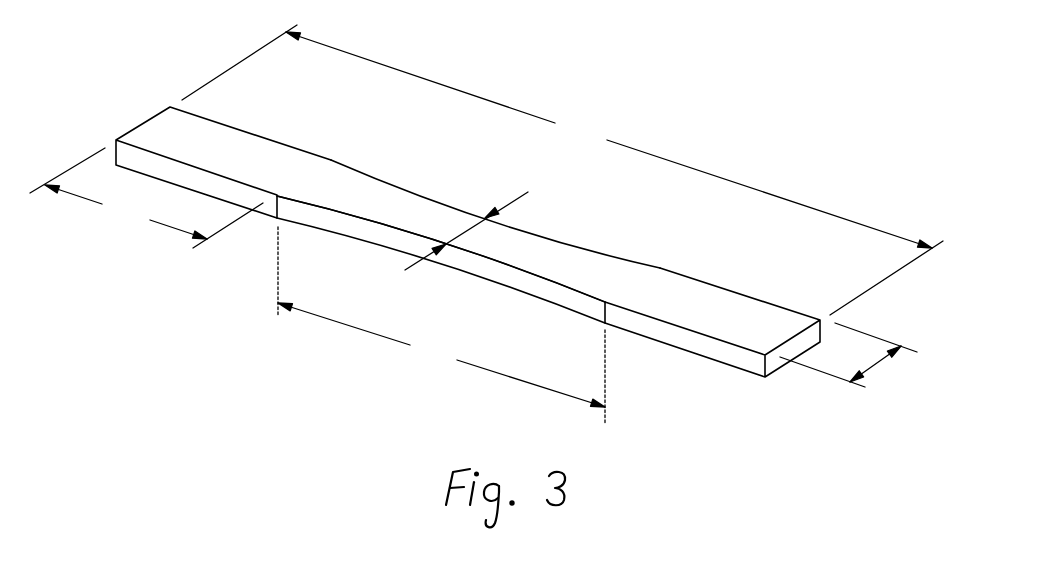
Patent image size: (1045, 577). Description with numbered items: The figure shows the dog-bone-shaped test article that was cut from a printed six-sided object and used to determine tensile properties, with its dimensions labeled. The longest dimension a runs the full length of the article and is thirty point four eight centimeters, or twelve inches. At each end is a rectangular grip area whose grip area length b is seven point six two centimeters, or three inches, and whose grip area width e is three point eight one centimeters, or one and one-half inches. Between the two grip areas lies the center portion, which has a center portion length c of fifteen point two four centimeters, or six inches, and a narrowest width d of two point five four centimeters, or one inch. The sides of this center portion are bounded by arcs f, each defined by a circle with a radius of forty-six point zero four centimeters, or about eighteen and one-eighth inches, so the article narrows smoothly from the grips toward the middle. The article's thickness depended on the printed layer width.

The longest dimension a is at (562, 170).
The grip area length b is at (146, 198).
The center portion length c is at (441, 325).
The narrowest width d is at (470, 232).
The grip area width e is at (883, 365).
The arcs f is at (391, 226).